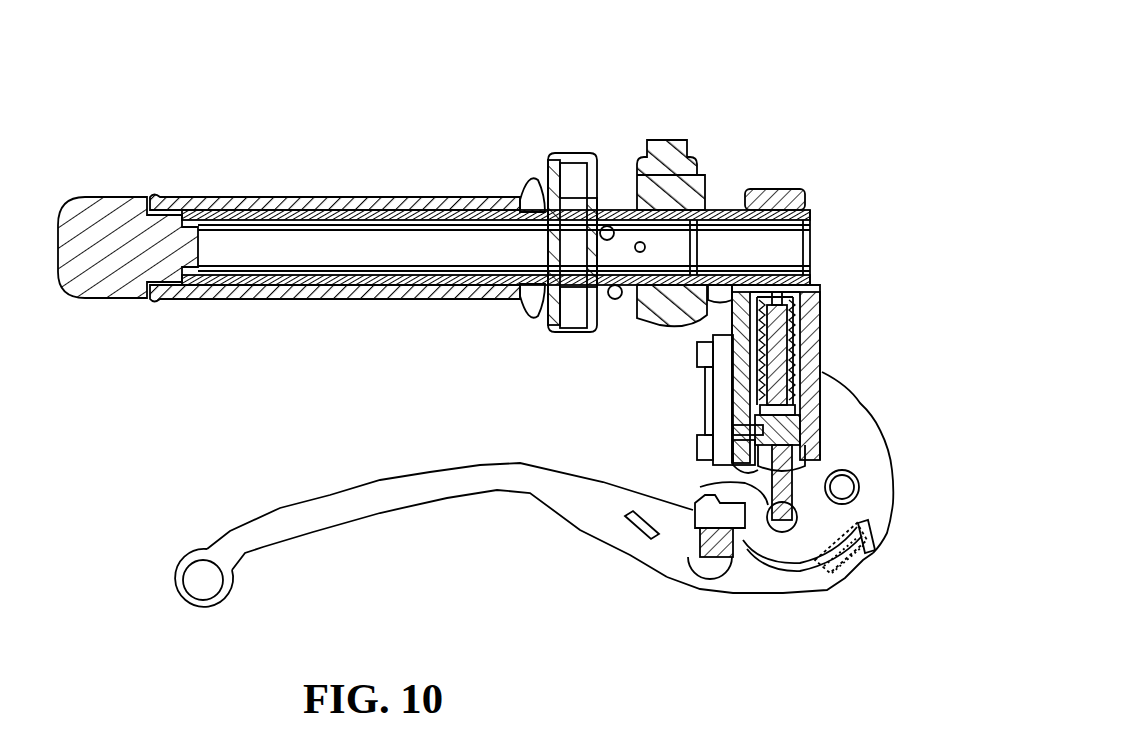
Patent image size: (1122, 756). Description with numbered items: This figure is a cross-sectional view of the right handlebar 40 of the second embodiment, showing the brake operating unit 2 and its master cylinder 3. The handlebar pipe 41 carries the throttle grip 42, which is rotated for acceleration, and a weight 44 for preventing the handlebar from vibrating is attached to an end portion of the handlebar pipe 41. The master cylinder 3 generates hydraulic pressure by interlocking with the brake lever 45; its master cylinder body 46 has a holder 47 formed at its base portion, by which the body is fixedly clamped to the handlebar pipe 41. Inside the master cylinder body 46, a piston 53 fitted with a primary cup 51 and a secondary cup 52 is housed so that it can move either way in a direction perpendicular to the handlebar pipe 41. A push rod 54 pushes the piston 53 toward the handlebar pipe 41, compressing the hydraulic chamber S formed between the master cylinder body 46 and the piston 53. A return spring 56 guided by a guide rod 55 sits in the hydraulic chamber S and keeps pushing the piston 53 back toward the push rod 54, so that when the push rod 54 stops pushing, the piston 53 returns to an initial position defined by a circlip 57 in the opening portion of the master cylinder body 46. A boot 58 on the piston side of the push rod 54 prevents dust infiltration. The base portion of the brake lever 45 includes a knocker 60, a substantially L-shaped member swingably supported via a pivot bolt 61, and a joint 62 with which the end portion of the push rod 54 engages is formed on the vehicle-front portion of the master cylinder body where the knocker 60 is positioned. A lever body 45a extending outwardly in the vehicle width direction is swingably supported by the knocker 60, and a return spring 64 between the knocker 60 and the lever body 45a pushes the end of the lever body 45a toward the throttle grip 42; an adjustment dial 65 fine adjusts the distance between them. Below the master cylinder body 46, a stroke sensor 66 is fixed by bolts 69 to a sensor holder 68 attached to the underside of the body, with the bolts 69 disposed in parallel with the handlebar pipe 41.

The brake operating unit 2 is at (896, 429).
The master cylinder 3 is at (836, 296).
The hydraulic chamber S is at (797, 323).
The right handlebar 40 is at (480, 116).
The handlebar pipe 41 is at (733, 210).
The throttle grip 42 is at (335, 200).
The weight 44 is at (110, 200).
The brake lever 45 is at (353, 480).
The lever body 45a is at (420, 497).
The master cylinder body 46 is at (812, 338).
The holder 47 is at (800, 198).
The primary cup 51 is at (800, 352).
The secondary cup 52 is at (803, 405).
The piston 53 is at (805, 385).
The push rod 54 is at (803, 458).
The guide rod 55 is at (795, 325).
The return spring 56 is at (732, 318).
The circlip 57 is at (740, 427).
The boot 58 is at (752, 468).
The knocker 60 is at (890, 486).
The pivot bolt 61 is at (842, 490).
The joint 62 is at (787, 525).
The return spring 64 is at (852, 568).
The adjustment dial 65 is at (693, 558).
The stroke sensor 66 is at (708, 385).
The sensor holder 68 is at (735, 455).
The bolts 69 is at (700, 355).